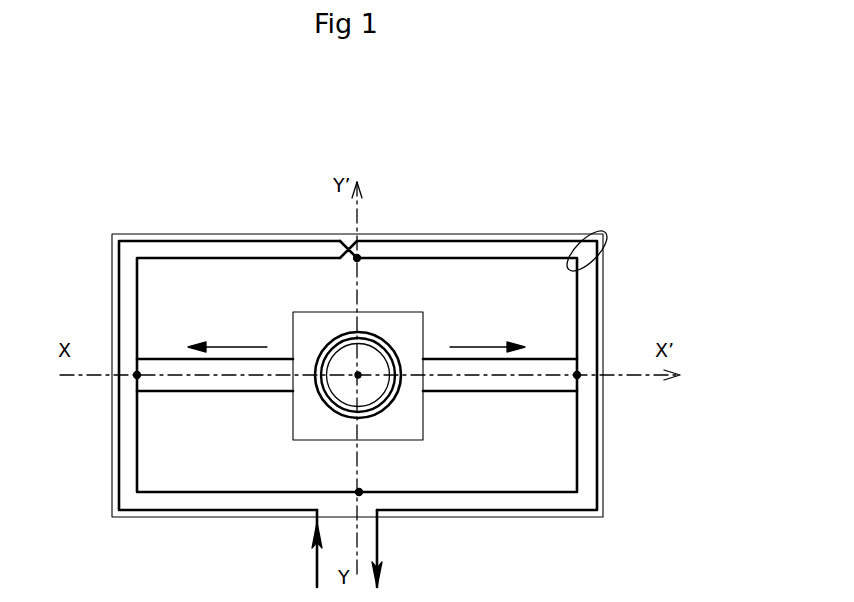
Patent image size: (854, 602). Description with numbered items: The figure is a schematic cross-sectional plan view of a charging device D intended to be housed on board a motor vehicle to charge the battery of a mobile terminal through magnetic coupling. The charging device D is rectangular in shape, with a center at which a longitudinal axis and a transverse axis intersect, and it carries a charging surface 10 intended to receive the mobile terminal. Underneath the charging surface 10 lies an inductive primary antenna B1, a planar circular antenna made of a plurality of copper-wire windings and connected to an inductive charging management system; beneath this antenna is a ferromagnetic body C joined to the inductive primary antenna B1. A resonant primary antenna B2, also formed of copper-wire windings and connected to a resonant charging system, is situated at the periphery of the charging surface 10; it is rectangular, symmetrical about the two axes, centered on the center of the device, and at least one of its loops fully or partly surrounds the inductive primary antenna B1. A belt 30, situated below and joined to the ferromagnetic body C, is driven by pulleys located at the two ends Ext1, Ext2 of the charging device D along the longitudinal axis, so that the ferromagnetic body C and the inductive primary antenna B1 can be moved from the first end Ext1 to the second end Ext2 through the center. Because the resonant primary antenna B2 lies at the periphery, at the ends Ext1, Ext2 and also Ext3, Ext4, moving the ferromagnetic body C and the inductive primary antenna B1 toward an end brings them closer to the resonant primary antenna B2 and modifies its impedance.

The charging surface 10 is at (600, 455).
The belt 30 is at (552, 383).
The charging device D is at (104, 231).
The ferromagnetic body C is at (423, 440).
The inductive primary antenna B1 is at (393, 333).
The resonant primary antenna B2 is at (612, 238).
The first end Ext1 is at (137, 373).
The second end Ext2 is at (577, 373).
The third end Ext3 is at (357, 256).
The fourth end Ext4 is at (359, 494).